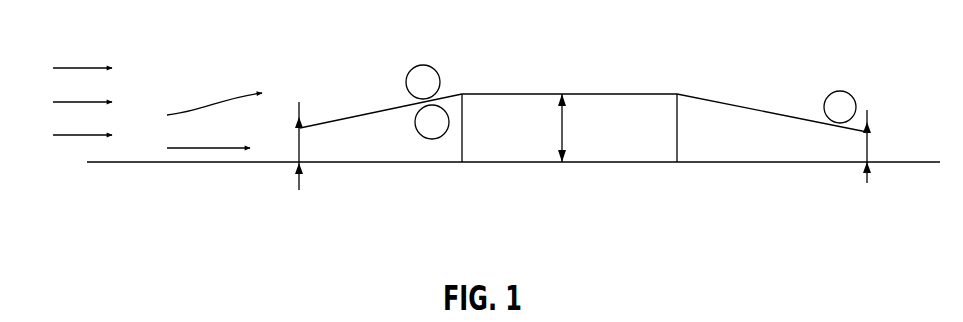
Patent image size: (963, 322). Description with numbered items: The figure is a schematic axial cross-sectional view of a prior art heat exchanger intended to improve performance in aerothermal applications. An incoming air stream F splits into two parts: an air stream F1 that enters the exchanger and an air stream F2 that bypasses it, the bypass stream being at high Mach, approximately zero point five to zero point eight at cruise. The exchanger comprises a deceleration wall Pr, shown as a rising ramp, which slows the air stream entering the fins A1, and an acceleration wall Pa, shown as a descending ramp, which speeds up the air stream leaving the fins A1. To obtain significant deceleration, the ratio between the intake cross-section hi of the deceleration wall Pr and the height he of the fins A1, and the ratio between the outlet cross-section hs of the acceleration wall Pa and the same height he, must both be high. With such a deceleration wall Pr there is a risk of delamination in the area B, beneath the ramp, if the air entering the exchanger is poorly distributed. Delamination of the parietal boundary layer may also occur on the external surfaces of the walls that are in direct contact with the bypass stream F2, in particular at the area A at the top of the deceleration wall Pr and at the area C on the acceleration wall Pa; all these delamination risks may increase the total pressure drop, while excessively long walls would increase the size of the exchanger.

The air stream F is at (68, 101).
The air stream entering the fins F1 is at (208, 135).
The air stream bypassing the heat exchanger F2 is at (214, 92).
The deceleration wall Pr is at (338, 117).
The acceleration wall Pa is at (735, 107).
The area A is at (423, 82).
The area B is at (432, 122).
The area C is at (840, 107).
The fins A1 is at (588, 140).
The intake cross-section hi is at (298, 149).
The height of the fins he is at (551, 128).
The outlet cross-section hs is at (870, 148).